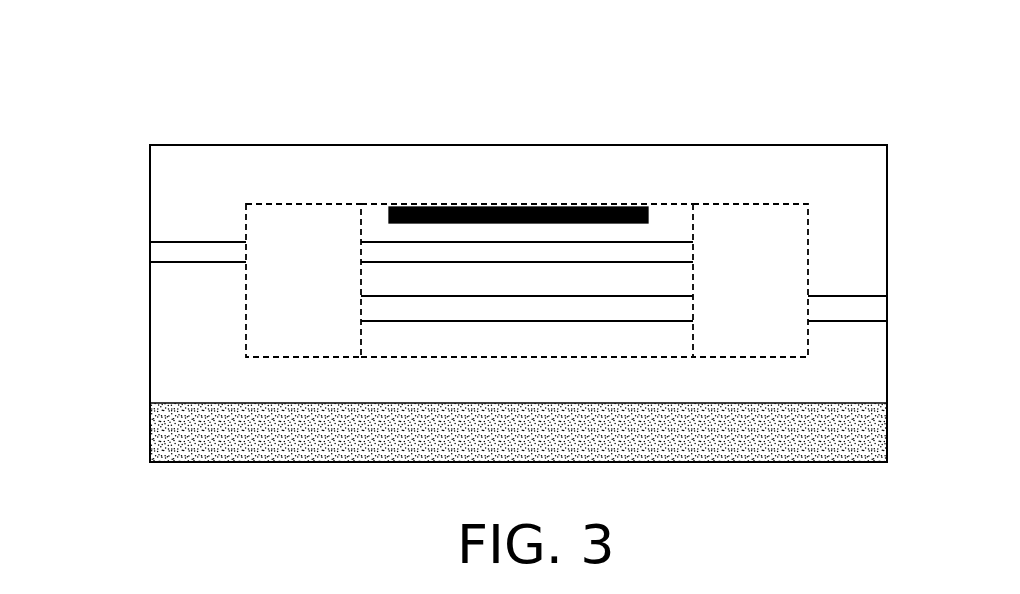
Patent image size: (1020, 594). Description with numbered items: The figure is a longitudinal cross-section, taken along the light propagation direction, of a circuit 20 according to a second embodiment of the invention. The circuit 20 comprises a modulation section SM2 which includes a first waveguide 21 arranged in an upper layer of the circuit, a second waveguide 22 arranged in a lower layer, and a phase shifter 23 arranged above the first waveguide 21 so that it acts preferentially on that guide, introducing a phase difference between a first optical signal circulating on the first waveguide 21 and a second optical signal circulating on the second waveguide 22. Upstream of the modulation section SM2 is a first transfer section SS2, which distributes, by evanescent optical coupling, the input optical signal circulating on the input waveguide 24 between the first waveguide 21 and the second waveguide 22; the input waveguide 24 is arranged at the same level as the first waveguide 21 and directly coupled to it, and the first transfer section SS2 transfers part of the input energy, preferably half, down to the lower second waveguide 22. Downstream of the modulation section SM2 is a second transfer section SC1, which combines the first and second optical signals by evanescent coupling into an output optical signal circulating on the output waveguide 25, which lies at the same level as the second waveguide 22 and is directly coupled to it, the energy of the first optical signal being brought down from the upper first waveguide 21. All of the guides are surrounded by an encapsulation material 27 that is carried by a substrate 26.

The circuit 20 is at (878, 116).
The first waveguide 21 is at (658, 258).
The second waveguide 22 is at (630, 310).
The phase shifter 23 is at (557, 205).
The input waveguide 24 is at (182, 252).
The output waveguide 25 is at (870, 310).
The substrate 26 is at (220, 447).
The encapsulation material 27 is at (872, 355).
The first transfer section SS2 is at (245, 302).
The modulation section SM2 is at (408, 357).
The second transfer section SC1 is at (763, 357).